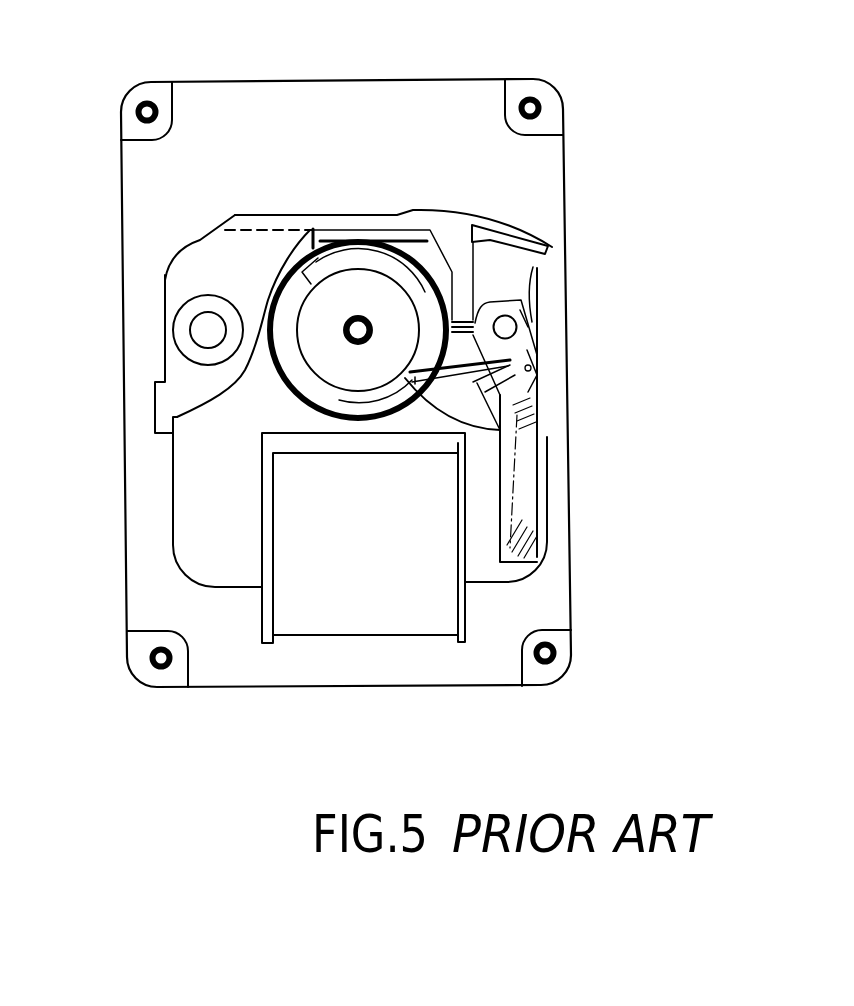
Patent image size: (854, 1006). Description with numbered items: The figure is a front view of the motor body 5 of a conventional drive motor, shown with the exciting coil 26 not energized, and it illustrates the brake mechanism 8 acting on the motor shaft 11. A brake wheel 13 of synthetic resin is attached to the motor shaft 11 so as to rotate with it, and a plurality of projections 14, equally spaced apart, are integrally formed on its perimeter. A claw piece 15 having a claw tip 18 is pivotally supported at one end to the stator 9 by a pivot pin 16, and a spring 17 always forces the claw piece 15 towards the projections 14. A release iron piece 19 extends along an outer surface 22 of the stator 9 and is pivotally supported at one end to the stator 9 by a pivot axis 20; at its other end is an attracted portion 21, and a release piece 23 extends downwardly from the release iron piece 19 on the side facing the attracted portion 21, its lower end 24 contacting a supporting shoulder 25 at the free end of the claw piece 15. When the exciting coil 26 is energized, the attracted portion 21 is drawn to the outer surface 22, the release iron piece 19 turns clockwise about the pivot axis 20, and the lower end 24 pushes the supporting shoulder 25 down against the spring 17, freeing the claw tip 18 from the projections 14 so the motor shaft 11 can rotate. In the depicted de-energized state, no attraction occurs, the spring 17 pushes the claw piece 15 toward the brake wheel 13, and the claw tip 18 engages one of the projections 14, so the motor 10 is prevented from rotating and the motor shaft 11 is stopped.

The motor body 5 is at (148, 344).
The brake mechanism 8 is at (552, 370).
The stator 9 is at (185, 473).
The motor 10 is at (357, 240).
The motor shaft 11 is at (350, 330).
The brake wheel 13 is at (380, 282).
The projections 14 is at (310, 227).
The claw piece 15 is at (533, 302).
The pivot pin 16 is at (510, 327).
The spring 17 is at (527, 477).
The claw tip 18 is at (532, 437).
The release iron piece 19 is at (197, 278).
The pivot axis 20 is at (205, 343).
The attracted portion 21 is at (518, 225).
The outer surface 22 is at (421, 228).
The release piece 23 is at (533, 267).
The lower end 24 is at (463, 275).
The supporting shoulder 25 is at (548, 397).
The exciting coil 26 is at (387, 623).